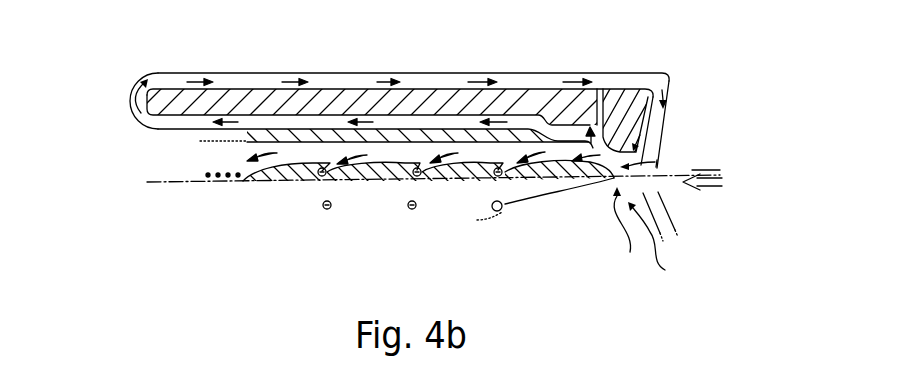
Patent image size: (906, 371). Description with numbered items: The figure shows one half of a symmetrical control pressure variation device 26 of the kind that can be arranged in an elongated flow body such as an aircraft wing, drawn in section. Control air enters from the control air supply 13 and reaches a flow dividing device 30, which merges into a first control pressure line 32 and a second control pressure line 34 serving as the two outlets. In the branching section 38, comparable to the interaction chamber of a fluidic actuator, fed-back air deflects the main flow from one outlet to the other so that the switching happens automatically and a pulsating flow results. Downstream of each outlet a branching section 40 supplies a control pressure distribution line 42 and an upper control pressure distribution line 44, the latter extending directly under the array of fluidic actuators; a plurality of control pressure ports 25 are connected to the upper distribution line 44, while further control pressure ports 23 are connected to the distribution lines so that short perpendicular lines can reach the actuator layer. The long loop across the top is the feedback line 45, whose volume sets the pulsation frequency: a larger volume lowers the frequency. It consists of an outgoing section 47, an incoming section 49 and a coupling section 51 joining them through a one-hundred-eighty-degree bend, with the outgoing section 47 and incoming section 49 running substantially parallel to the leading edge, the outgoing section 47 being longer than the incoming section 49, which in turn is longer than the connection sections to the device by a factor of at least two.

The control air supply 13 is at (710, 186).
The control pressure port 23 is at (325, 209).
The control pressure port 25 is at (307, 180).
The control pressure variation device 26 is at (675, 62).
The flow dividing device 30 is at (627, 232).
The first control pressure line 32 is at (659, 241).
The second control pressure line 34 is at (652, 145).
The branching section 38 is at (662, 160).
The branching section 40 is at (618, 97).
The control pressure distribution line 42 is at (592, 222).
The upper control pressure distribution line 44 is at (527, 152).
The feedback line 45 is at (228, 66).
The outgoing section 47 is at (163, 122).
The incoming section 49 is at (163, 78).
The coupling section 51 is at (130, 95).